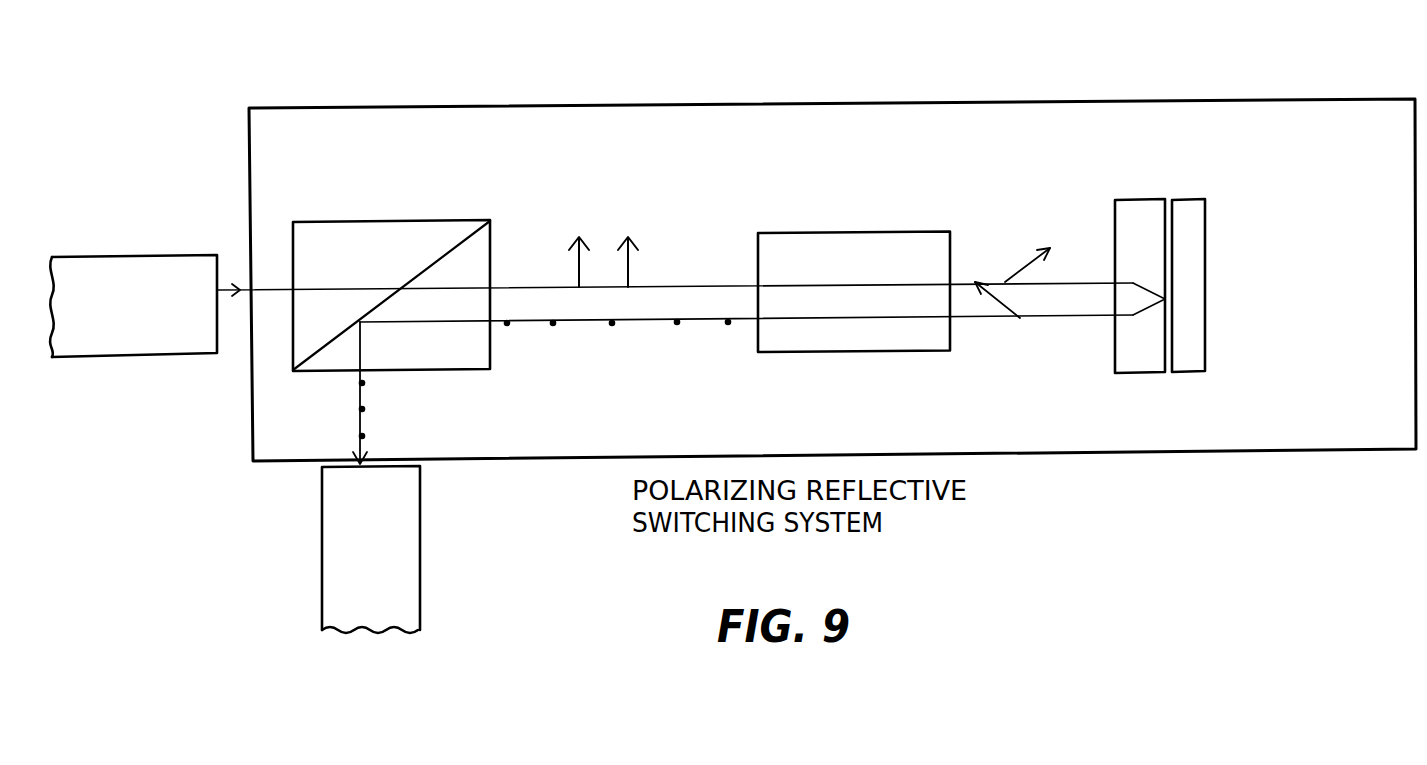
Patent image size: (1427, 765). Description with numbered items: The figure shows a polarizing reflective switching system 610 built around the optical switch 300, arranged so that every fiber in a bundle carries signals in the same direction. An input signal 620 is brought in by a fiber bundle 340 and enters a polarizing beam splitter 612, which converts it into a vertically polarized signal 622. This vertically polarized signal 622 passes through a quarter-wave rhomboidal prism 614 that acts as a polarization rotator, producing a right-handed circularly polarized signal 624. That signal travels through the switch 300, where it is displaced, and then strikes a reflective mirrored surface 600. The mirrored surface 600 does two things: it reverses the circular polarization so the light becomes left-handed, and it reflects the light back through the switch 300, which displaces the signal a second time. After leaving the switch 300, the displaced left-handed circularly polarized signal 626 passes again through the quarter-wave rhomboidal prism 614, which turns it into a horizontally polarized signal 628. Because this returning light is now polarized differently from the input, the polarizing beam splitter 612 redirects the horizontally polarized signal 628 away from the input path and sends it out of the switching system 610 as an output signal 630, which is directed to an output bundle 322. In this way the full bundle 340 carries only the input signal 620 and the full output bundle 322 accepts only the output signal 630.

The polarizing reflective switching system 610 is at (1307, 107).
The polarizing beam splitter 612 is at (305, 238).
The quarter-wave rhomboidal prism 614 is at (903, 232).
The vertically polarized signal 622 is at (579, 273).
The horizontally polarized signal 628 is at (600, 322).
The right-handed circularly polarized signal 624 is at (1022, 268).
The left-handed circularly polarized signal 626 is at (993, 290).
The optical switch 300 is at (1142, 365).
The reflective mirrored surface 600 is at (1198, 357).
The fiber bundle 340 is at (126, 257).
The input signal 620 is at (229, 298).
The output signal 630 is at (366, 458).
The output bundle 322 is at (410, 562).